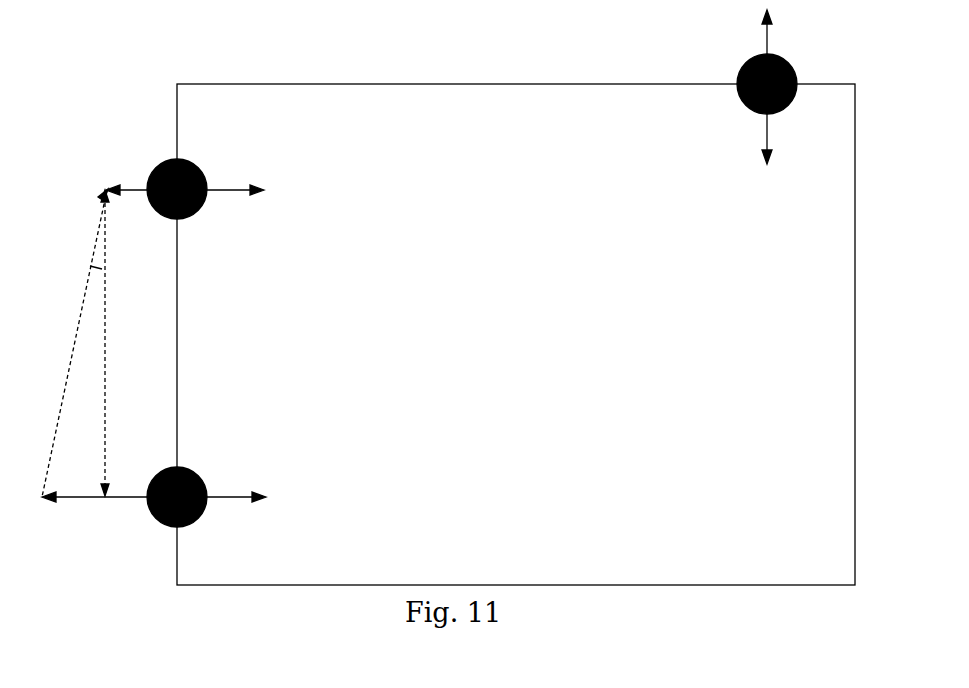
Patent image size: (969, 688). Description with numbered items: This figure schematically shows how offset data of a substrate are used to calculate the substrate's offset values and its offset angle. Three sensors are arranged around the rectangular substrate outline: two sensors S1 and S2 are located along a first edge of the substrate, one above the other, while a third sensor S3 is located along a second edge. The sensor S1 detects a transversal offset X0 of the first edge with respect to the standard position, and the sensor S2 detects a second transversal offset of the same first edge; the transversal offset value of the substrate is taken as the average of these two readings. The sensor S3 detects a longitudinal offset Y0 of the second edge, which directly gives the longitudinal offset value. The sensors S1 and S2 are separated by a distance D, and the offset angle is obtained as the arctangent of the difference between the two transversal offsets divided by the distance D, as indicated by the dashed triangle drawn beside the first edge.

The sensor S1 is at (185, 172).
The sensor S2 is at (154, 480).
The sensor S3 is at (751, 87).
The distance between the sensors S1 and S2 D is at (121, 343).
The transversal offset X0 is at (141, 239).
The longitudinal offset Y0 is at (797, 144).